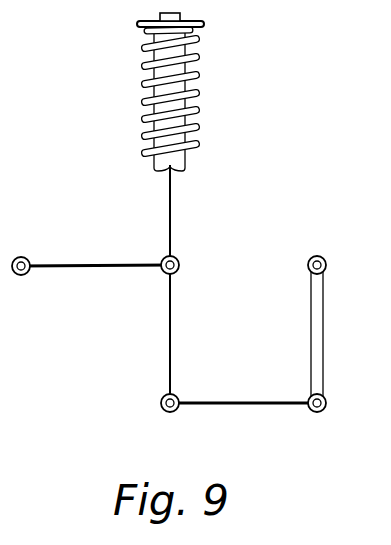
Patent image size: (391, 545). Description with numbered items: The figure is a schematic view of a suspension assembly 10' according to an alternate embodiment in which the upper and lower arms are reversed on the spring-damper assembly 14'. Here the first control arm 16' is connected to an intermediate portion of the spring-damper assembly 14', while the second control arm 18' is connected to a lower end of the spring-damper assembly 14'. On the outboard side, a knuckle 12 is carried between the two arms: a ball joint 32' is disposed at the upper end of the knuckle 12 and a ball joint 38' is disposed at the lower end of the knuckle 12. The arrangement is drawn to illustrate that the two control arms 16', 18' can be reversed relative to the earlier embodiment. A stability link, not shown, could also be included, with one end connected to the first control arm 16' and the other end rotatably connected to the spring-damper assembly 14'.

The suspension assembly 10' is at (200, 229).
The spring-damper assembly 14' is at (197, 208).
The first control arm 16' is at (95, 293).
The second control arm 18' is at (239, 420).
The knuckle 12 is at (320, 350).
The ball joint 32' is at (347, 254).
The ball joint 38' is at (346, 420).